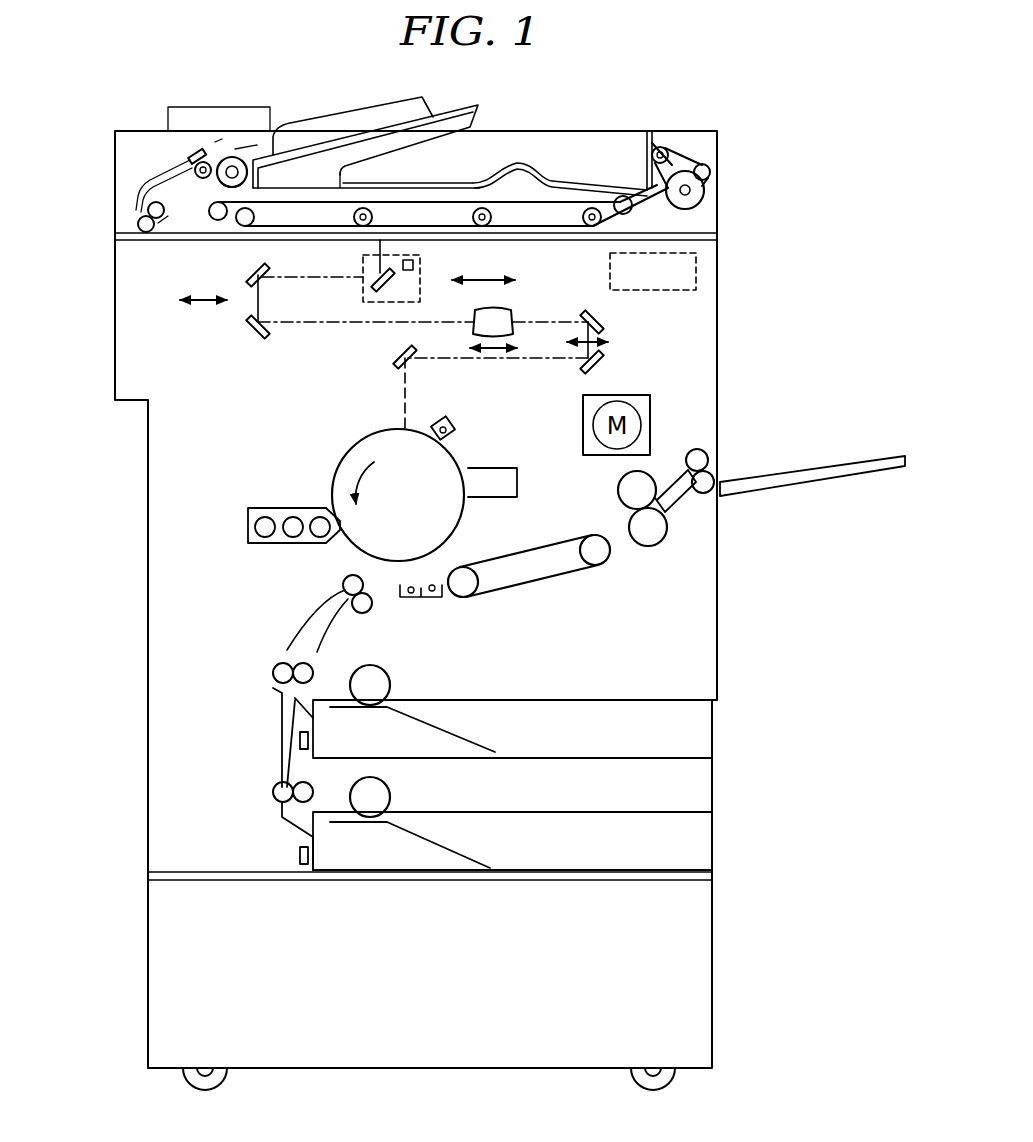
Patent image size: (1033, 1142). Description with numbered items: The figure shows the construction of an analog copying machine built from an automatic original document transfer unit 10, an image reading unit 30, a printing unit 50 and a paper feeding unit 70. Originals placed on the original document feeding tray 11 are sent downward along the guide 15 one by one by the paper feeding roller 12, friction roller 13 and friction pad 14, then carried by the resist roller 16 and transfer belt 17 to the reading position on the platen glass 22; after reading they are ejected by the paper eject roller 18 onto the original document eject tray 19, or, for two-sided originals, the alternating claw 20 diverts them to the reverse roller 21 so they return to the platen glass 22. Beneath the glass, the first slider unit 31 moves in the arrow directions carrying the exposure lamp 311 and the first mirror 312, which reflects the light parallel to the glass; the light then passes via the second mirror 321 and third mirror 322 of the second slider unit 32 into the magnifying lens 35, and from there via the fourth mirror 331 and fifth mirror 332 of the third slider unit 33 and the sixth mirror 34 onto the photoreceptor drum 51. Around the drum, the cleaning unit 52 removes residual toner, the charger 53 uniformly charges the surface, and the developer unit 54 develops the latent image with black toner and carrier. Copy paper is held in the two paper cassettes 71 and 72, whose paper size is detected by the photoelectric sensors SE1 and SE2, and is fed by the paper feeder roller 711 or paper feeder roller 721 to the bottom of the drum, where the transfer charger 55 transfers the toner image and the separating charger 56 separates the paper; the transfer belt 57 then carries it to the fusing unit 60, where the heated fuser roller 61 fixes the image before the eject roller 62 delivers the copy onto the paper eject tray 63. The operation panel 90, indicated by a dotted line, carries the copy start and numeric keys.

The automatic original document transfer unit 10 is at (105, 192).
The original document feeding tray 11 is at (362, 128).
The paper feeding roller 12 is at (234, 156).
The friction roller 13 is at (200, 178).
The friction pad 14 is at (197, 150).
The guide 15 is at (150, 170).
The resist roller 16 is at (140, 222).
The transfer belt 17 is at (450, 200).
The paper eject roller 18 is at (655, 151).
The original document eject tray 19 is at (550, 178).
The alternating claw 20 is at (683, 164).
The reverse roller 21 is at (705, 192).
The platen glass 22 is at (565, 240).
The image reading unit 30 is at (100, 322).
The first slider unit (scanner) 31 is at (436, 266).
The exposure lamp 311 is at (414, 276).
The first mirror 312 is at (378, 296).
The second slider unit 32 is at (224, 317).
The second mirror 321 is at (250, 270).
The third mirror 322 is at (250, 336).
The third slider unit 33 is at (650, 347).
The fourth mirror 331 is at (606, 310).
The fifth mirror 332 is at (606, 370).
The sixth mirror 34 is at (394, 350).
The magnifying lens 35 is at (505, 311).
The operation panel 90 is at (700, 272).
The printing unit 50 is at (130, 532).
The photoreceptor drum 51 is at (358, 441).
The cleaning unit 52 is at (508, 466).
The charger 53 is at (446, 420).
The developer unit 54 is at (287, 547).
The transfer charger 55 is at (409, 600).
The separating charger 56 is at (438, 599).
The transfer belt 57 is at (530, 588).
The fusing unit 60 is at (602, 492).
The fuser roller 61 is at (614, 505).
The eject roller 62 is at (706, 450).
The paper eject tray 63 is at (850, 461).
The paper feeding unit 70 is at (130, 748).
The paper cassette 71 is at (588, 706).
The paper feeder roller 711 is at (391, 688).
The paper cassette 72 is at (588, 821).
The paper feeder roller 721 is at (391, 803).
The paper size detecting photoelectric sensor SE1 is at (298, 742).
The paper size detecting photoelectric sensor SE2 is at (298, 853).